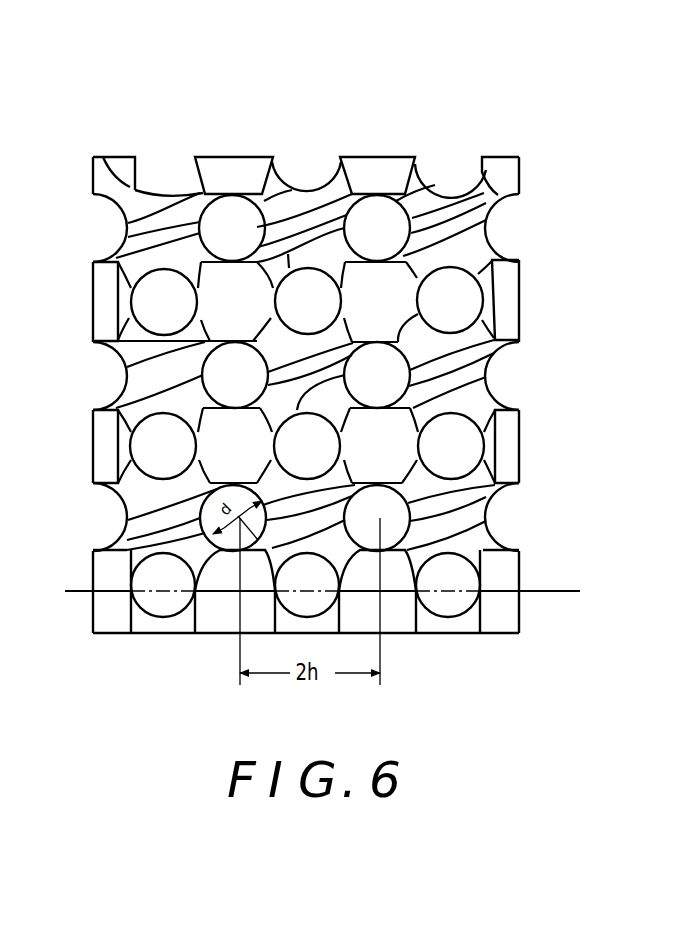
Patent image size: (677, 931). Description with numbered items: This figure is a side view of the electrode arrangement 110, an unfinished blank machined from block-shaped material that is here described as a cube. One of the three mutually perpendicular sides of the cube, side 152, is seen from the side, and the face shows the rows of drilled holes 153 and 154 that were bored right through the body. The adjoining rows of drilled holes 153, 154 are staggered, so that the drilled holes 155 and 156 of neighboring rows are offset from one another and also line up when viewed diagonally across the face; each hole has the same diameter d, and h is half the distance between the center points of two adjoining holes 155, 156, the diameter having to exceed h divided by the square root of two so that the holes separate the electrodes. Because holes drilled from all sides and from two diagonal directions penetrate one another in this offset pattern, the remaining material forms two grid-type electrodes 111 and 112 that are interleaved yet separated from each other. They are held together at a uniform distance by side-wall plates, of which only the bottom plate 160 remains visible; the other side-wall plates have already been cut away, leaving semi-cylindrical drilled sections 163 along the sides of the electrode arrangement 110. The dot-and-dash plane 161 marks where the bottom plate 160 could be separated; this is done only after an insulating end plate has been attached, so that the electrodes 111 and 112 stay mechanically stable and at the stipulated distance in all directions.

The electrode arrangement 110 is at (320, 383).
The grid-type electrode 111 is at (100, 149).
The grid-type electrode 112 is at (368, 150).
The side of the cube 152 is at (245, 148).
The row of drilled holes 153 is at (162, 309).
The row of drilled holes 154 is at (163, 453).
The drilled hole 155 is at (232, 217).
The drilled hole 156 is at (382, 235).
The bottom plate 160 is at (112, 625).
The plane 161 is at (558, 595).
The semi-cylindrical drilled section 163 is at (118, 205).